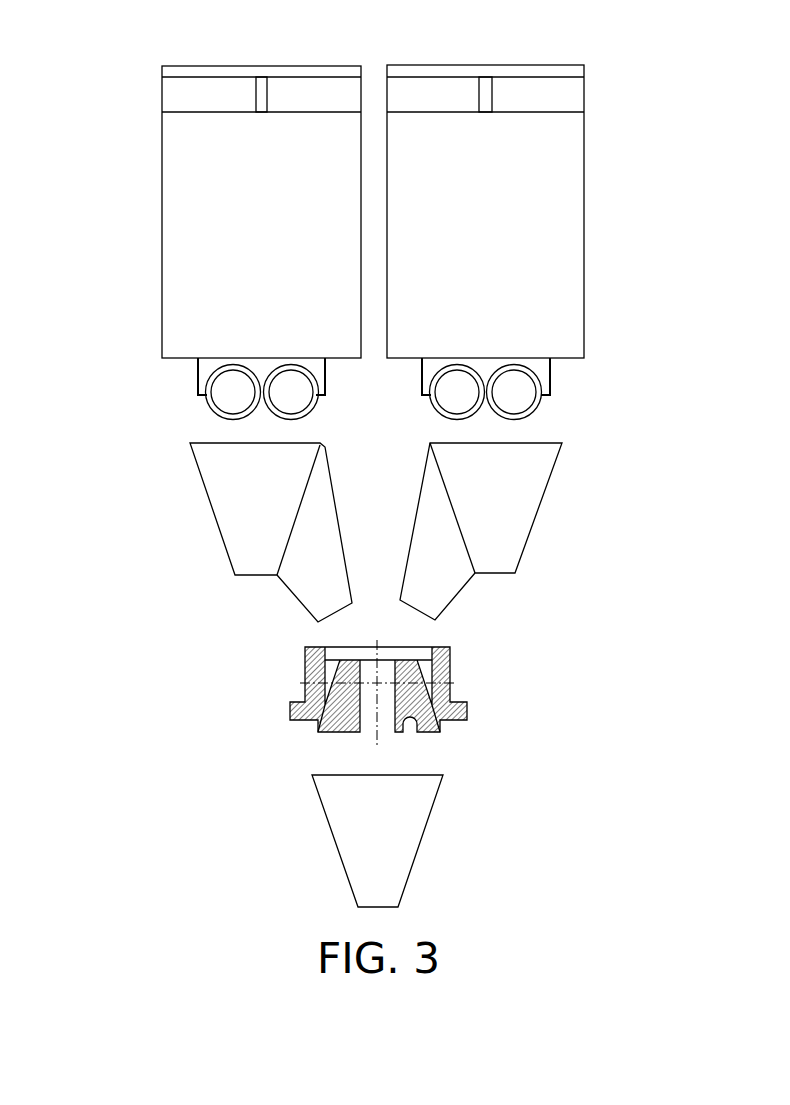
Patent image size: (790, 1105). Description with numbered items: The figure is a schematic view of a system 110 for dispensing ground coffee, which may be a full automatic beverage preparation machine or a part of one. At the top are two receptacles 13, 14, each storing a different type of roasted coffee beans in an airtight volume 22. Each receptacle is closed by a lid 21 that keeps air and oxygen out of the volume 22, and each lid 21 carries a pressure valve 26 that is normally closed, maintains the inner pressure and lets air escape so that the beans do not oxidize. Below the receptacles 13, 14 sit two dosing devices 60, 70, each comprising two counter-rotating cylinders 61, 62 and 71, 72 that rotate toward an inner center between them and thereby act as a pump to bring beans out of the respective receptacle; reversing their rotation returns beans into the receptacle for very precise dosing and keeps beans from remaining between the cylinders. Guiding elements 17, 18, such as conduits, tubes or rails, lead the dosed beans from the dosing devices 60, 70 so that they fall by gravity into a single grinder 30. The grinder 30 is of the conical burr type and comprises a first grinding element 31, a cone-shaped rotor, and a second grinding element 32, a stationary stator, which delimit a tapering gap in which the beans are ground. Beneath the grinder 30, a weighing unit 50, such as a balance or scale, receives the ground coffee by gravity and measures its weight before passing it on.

The receptacle 13 is at (167, 210).
The receptacle 14 is at (577, 214).
The guiding element 17 is at (233, 517).
The guiding element 18 is at (523, 510).
The lid 21 is at (188, 83).
The volume 22 is at (197, 165).
The pressure valve 26 is at (262, 98).
The grinder 30 is at (305, 675).
The first grinding element 31 is at (408, 700).
The second grinding element 32 is at (440, 683).
The weighing unit 50 is at (347, 828).
The dosing device 60 is at (219, 408).
The cylinder 61 is at (207, 400).
The cylinder 62 is at (280, 418).
The dosing device 70 is at (528, 407).
The cylinder 71 is at (470, 418).
The cylinder 72 is at (548, 400).
The system 110 is at (628, 626).